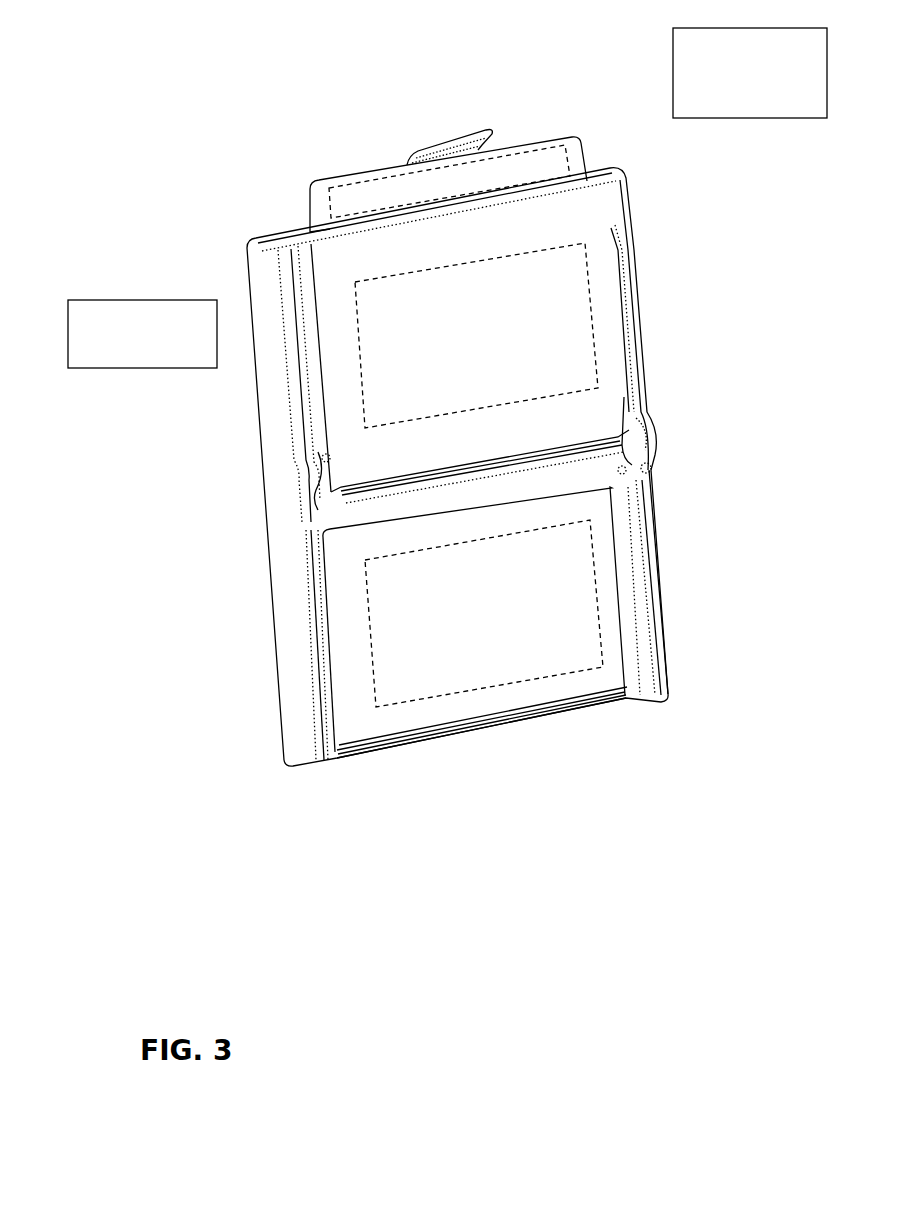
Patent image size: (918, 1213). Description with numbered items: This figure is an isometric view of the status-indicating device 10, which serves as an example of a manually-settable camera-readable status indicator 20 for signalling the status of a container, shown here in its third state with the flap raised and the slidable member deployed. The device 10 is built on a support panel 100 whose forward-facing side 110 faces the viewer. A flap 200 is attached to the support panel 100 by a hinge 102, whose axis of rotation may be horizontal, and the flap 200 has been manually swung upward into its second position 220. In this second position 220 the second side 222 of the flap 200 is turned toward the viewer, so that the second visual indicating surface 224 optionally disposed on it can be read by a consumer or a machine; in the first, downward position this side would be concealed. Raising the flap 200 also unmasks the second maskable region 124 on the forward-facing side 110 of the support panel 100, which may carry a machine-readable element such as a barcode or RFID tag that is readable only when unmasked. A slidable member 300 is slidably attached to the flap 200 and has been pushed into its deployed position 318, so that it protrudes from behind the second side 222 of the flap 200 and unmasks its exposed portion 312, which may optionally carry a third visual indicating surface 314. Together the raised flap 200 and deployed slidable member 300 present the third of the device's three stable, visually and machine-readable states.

The status-indicating device 10 is at (610, 751).
The camera-readable status indicator 20 is at (447, 531).
The support panel 100 is at (288, 554).
The hinge 102 is at (628, 450).
The forward-facing side 110 is at (350, 718).
The second maskable region 124 is at (598, 599).
The flap 200 is at (597, 235).
The second position 220 is at (142, 334).
The second side 222 is at (603, 322).
The second visual indicating surface 224 is at (353, 342).
The slidable member 300 is at (438, 142).
The exposed portion 312 is at (353, 174).
The third visual indicating surface 314 is at (328, 209).
The deployed position 318 is at (750, 73).